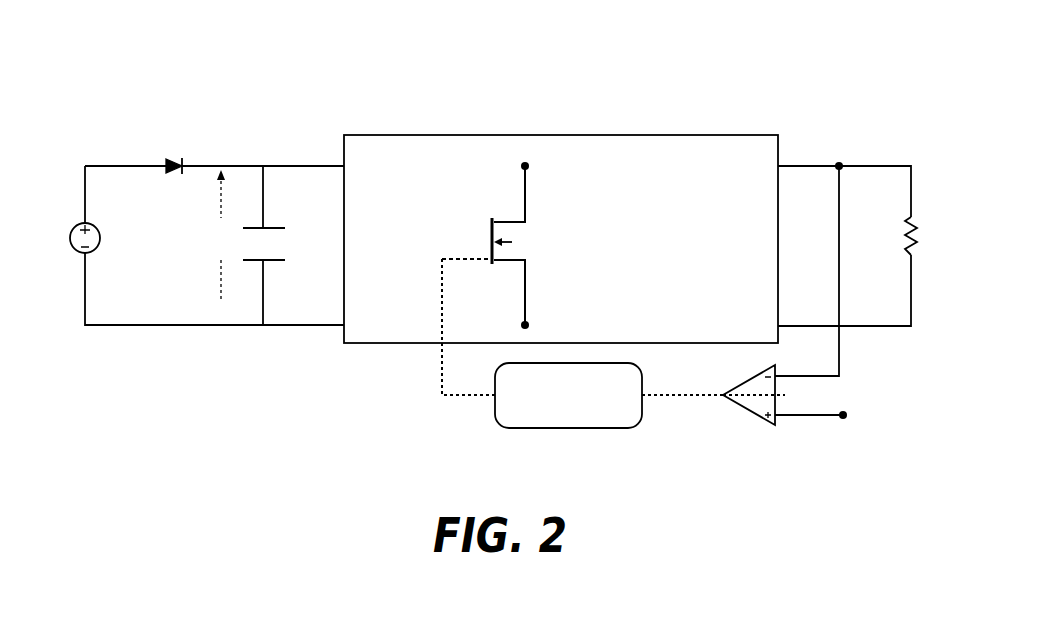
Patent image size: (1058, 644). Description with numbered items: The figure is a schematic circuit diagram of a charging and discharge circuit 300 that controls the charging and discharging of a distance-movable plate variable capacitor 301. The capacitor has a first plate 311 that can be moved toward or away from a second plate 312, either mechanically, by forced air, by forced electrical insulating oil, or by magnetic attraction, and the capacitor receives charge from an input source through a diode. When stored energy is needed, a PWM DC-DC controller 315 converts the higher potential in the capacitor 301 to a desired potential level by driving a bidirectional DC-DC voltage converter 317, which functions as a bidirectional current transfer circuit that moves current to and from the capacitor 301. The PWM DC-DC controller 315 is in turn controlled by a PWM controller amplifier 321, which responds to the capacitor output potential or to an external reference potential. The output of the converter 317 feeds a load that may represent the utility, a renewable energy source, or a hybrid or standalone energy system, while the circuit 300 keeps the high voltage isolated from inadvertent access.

The charging and discharge circuit 300 is at (756, 98).
The distance-movable plate variable capacitor 301 is at (277, 225).
The first plate 311 is at (253, 231).
The second plate 312 is at (273, 262).
The PWM DC-DC controller 315 is at (502, 421).
The bidirectional DC-DC voltage converter 317 is at (561, 239).
The PWM controller amplifier 321 is at (745, 411).